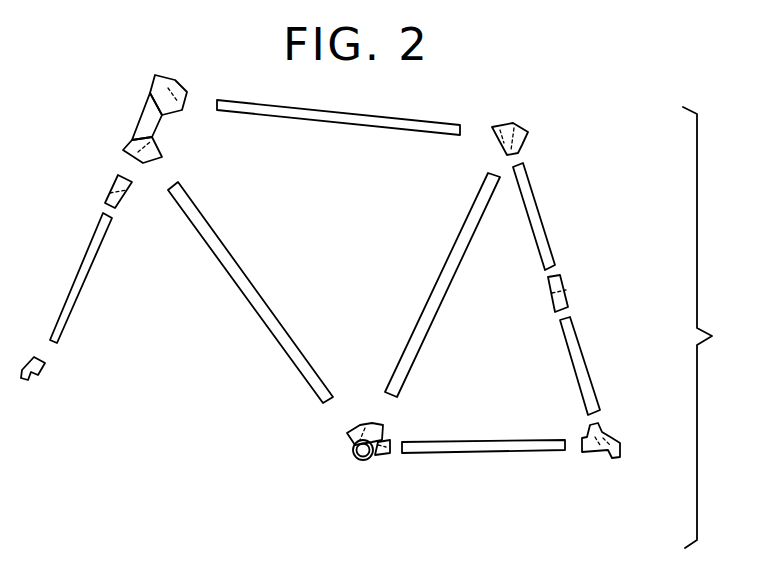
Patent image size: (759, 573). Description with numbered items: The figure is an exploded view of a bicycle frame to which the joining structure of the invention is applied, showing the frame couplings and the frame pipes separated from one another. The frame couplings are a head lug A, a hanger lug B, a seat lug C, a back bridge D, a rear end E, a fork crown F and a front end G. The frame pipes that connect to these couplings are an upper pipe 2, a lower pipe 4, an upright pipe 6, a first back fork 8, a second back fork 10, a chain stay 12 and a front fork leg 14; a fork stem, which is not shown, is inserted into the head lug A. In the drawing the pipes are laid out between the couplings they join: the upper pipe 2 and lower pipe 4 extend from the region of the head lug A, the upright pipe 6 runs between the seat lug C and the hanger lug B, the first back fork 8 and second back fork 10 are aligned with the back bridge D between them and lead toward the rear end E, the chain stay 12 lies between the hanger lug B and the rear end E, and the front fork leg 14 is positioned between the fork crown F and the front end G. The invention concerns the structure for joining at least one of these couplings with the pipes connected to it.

The upper pipe 2 is at (337, 113).
The lower pipe 4 is at (245, 298).
The upright pipe 6 is at (437, 285).
The first back fork 8 is at (540, 223).
The second back fork 10 is at (583, 362).
The chain stay 12 is at (487, 450).
The front fork leg 14 is at (78, 278).
The head lug A is at (143, 123).
The hanger lug B is at (353, 457).
The seat lug C is at (513, 128).
The back bridge D is at (560, 285).
The rear end E is at (612, 437).
The fork crown F is at (115, 190).
The front end G is at (33, 370).